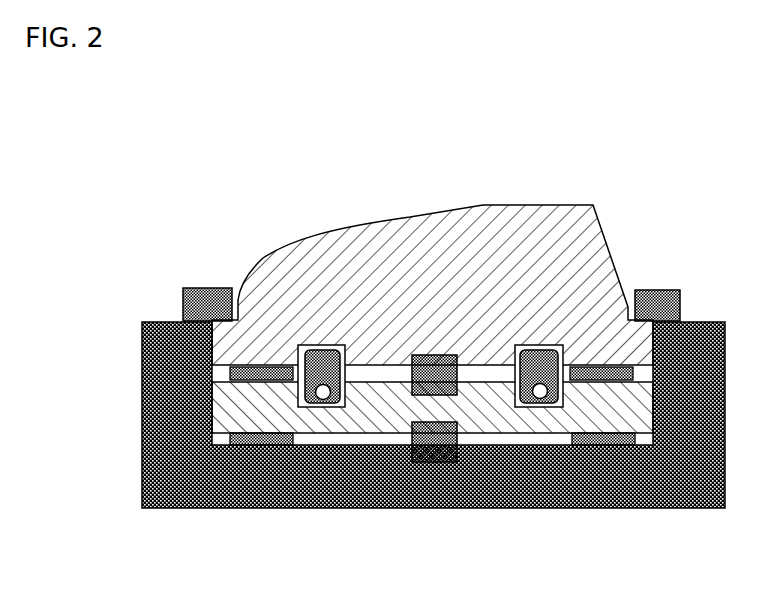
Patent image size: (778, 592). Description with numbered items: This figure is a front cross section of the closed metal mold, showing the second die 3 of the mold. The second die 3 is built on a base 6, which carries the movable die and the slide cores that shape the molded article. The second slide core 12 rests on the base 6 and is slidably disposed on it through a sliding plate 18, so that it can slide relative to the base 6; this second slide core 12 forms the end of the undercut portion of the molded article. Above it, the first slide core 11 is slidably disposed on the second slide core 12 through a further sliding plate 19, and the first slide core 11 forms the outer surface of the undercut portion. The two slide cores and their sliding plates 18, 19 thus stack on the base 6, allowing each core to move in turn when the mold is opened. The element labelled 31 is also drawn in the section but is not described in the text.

The second die 3 is at (192, 509).
The base 6 is at (675, 497).
The first slide core 11 is at (379, 227).
The second slide core 12 is at (387, 420).
The sliding plate 18 is at (268, 445).
The sliding plate 19 is at (267, 373).
The mounting member 31 is at (320, 355).